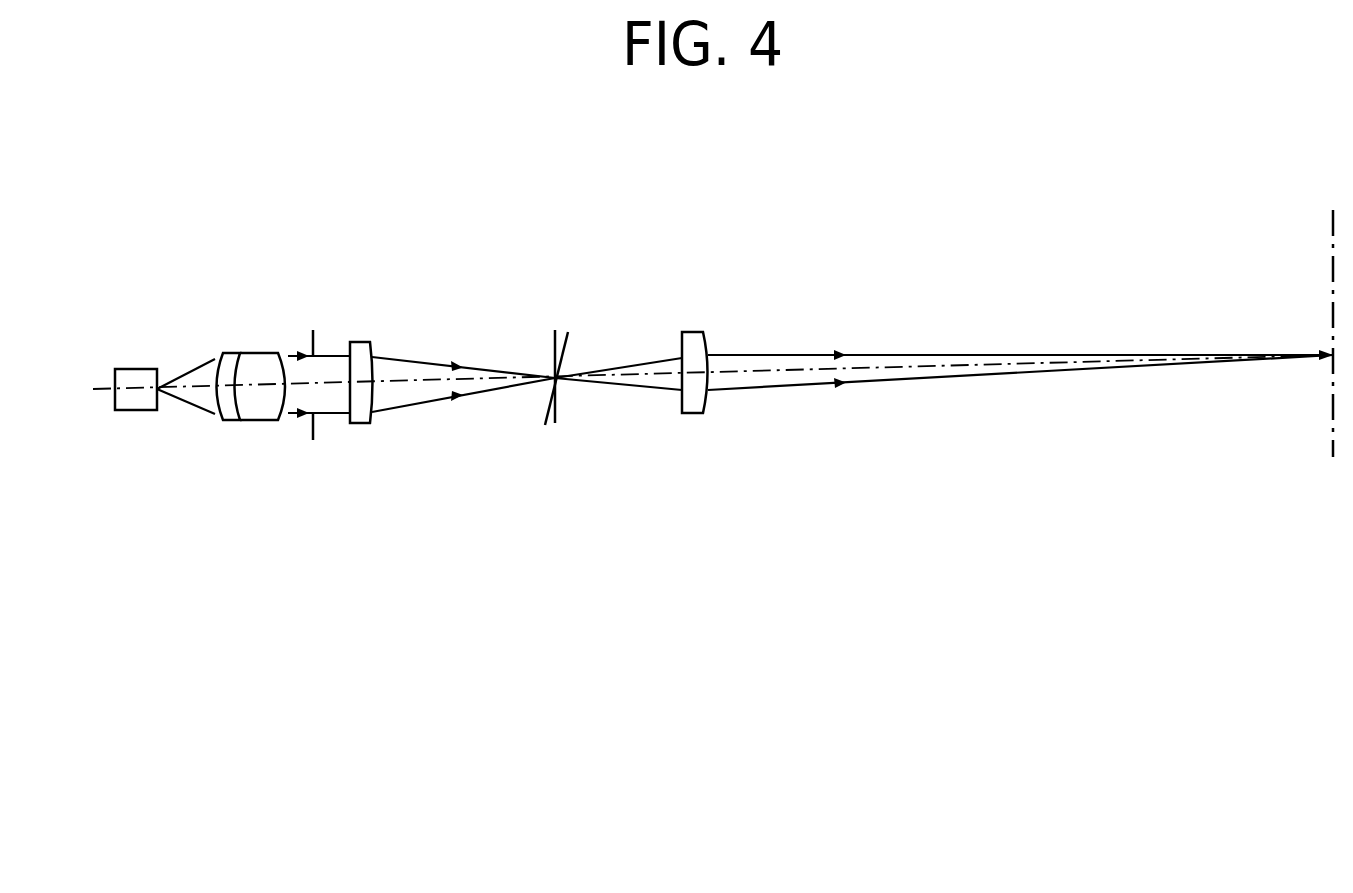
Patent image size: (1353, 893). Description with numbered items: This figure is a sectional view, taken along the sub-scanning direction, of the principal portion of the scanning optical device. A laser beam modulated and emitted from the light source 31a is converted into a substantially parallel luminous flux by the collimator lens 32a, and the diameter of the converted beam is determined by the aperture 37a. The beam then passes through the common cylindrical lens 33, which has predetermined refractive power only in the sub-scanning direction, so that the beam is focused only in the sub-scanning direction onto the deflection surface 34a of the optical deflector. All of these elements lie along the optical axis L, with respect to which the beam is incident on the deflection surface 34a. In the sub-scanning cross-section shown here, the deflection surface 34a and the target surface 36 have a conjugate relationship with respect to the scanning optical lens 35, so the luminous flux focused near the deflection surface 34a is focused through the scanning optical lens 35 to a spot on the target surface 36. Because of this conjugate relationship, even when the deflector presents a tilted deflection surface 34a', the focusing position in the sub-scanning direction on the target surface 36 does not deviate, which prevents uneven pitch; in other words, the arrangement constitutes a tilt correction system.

The light source 31a is at (137, 412).
The collimator lens 32a is at (245, 427).
The cylindrical lens 33 is at (362, 425).
The deflection surface 34a is at (591, 419).
The tilted deflection surface 34a' is at (519, 420).
The scanning optical lens 35 is at (693, 415).
The optical axis L is at (788, 370).
The target surface 36 is at (1333, 443).
The aperture 37a is at (307, 330).